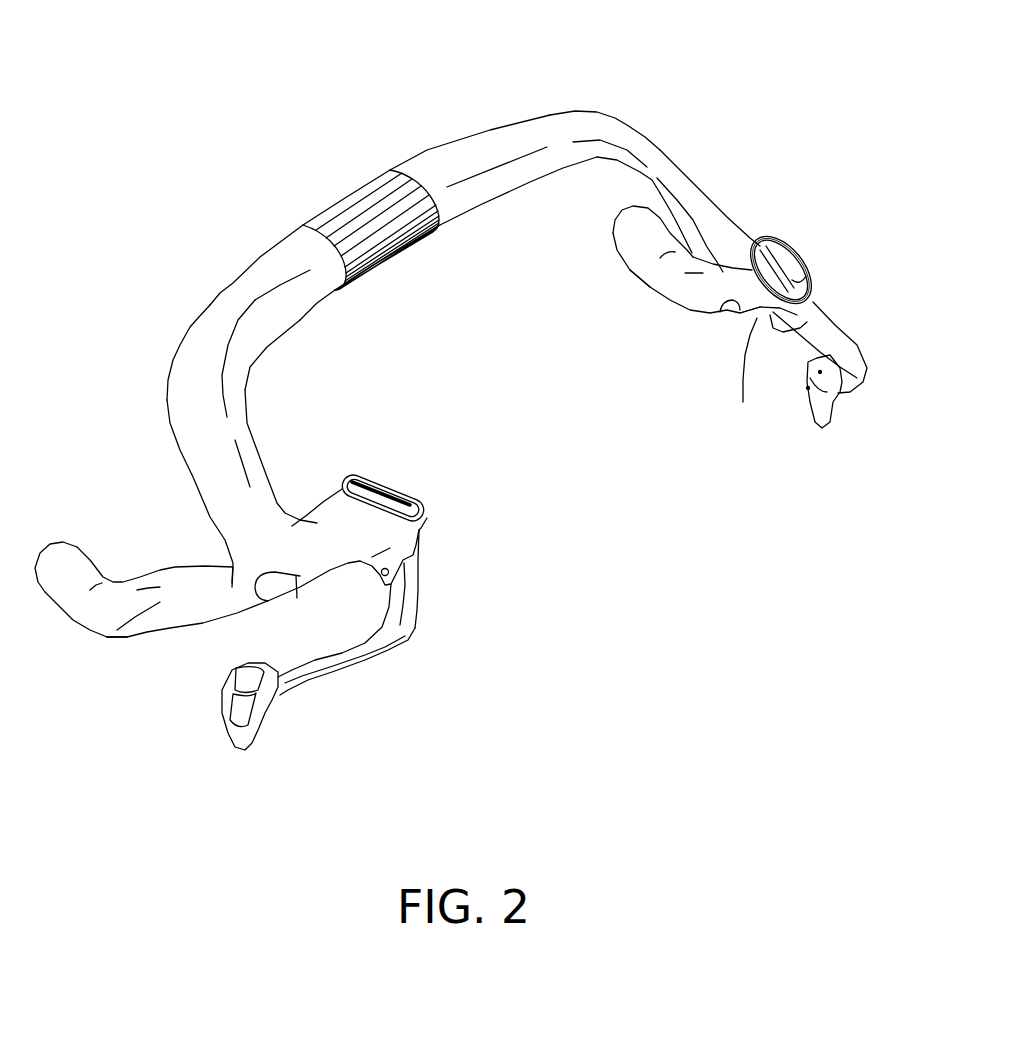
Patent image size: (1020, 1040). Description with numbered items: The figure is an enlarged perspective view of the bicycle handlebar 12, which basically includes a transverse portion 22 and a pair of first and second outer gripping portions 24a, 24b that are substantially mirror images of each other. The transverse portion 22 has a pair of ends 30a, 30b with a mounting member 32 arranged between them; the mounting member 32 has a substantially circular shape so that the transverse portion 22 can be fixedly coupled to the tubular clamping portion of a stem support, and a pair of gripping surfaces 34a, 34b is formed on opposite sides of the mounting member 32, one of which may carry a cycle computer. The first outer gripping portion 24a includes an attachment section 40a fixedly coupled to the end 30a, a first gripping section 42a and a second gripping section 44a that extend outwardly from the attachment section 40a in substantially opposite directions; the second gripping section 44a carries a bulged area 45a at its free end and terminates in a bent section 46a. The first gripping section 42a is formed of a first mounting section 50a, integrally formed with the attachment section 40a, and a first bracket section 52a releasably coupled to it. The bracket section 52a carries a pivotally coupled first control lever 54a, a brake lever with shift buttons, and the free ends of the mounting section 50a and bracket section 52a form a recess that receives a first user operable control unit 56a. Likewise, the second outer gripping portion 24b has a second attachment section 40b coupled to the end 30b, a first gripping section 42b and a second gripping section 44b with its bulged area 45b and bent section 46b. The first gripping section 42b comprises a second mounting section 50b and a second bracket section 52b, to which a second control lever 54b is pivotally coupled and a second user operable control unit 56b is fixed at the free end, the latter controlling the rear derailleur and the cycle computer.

The bicycle handlebar 12 is at (645, 94).
The transverse portion 22 is at (427, 152).
The first outer gripping portion 24a is at (733, 221).
The second outer gripping portion 24b is at (194, 627).
The first end of transverse portion 30a is at (560, 112).
The second end of transverse portion 30b is at (182, 330).
The mounting member 32 is at (345, 203).
The first gripping surface 34a is at (497, 153).
The second gripping surface 34b is at (240, 310).
The first attachment section 40a is at (697, 185).
The second attachment section 40b is at (260, 447).
The first gripping section 42a is at (820, 312).
The first gripping section 42b is at (316, 510).
The second gripping section 44a is at (683, 311).
The second gripping section 44b is at (173, 567).
The bulged area 45a is at (653, 288).
The bulged area 45b is at (117, 632).
The bent section 46a is at (613, 243).
The bent section 46b is at (78, 547).
The first mounting section 50a is at (745, 290).
The second mounting section 50b is at (385, 478).
The first bracket section 52a is at (753, 318).
The second bracket section 52b is at (370, 513).
The first control lever 54a is at (847, 395).
The second control lever 54b is at (410, 645).
The first user operable control unit 56a is at (810, 265).
The second user operable control unit 56b is at (430, 510).